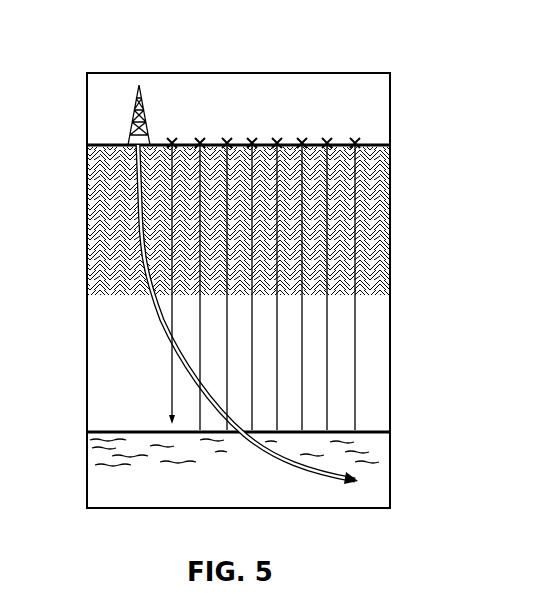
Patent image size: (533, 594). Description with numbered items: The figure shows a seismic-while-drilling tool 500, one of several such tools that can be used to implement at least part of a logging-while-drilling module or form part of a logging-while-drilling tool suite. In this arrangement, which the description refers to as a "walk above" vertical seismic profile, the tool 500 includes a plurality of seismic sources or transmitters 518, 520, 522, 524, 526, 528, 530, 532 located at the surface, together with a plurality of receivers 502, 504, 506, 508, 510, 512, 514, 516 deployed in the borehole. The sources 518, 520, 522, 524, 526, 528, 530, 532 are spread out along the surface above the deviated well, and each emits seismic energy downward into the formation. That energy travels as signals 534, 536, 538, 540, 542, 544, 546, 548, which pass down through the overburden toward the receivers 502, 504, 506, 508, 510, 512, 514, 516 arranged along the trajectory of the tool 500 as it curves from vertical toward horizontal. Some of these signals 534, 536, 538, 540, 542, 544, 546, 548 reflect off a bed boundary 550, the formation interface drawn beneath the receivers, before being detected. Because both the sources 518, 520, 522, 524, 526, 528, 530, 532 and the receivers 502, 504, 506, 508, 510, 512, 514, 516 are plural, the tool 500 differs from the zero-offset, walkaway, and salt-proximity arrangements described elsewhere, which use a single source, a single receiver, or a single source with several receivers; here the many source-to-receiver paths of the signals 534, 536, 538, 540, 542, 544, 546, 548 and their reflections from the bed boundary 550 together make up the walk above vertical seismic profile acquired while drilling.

The seismic-while-drilling tool 500 is at (107, 30).
The receiver 502 is at (168, 336).
The receiver 504 is at (215, 385).
The receiver 506 is at (168, 424).
The receiver 508 is at (225, 440).
The receiver 510 is at (262, 455).
The receiver 512 is at (290, 462).
The receiver 514 is at (320, 468).
The receiver 516 is at (350, 480).
The seismic source 518 is at (355, 140).
The seismic source 520 is at (327, 140).
The seismic source 522 is at (302, 140).
The seismic source 524 is at (277, 140).
The seismic source 526 is at (252, 140).
The seismic source 528 is at (227, 140).
The seismic source 530 is at (200, 140).
The seismic source 532 is at (172, 140).
The signal 534 is at (378, 466).
The signal 536 is at (328, 443).
The signal 538 is at (303, 420).
The signal 540 is at (278, 395).
The signal 542 is at (253, 366).
The signal 544 is at (228, 345).
The signal 546 is at (187, 320).
The signal 548 is at (178, 301).
The bed boundary 550 is at (86, 455).